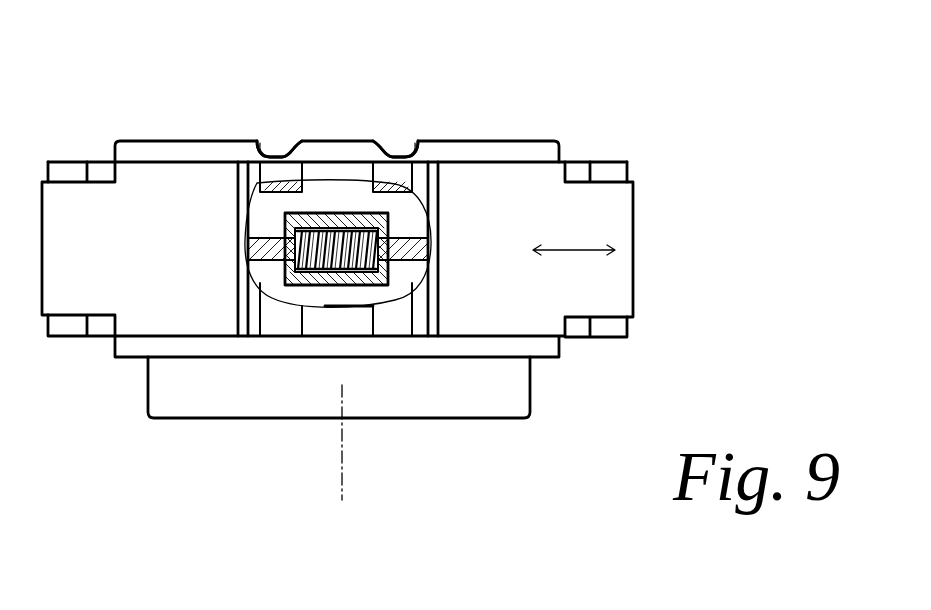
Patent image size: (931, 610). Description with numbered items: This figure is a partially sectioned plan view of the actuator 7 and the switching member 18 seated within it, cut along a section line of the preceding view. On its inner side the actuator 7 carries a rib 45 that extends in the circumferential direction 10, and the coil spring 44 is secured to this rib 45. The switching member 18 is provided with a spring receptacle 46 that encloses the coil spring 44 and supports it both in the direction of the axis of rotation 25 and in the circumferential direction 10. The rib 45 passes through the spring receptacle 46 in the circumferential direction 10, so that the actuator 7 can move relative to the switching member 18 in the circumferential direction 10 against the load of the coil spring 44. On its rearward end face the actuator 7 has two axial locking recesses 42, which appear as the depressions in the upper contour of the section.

The actuator 7 is at (481, 244).
The circumferential direction 10 is at (561, 251).
The switching member 18 is at (341, 195).
The axis of rotation 25 is at (343, 450).
The axial locking recesses 42 is at (273, 126).
The coil spring 44 is at (343, 286).
The rib 45 is at (259, 248).
The spring receptacle 46 is at (258, 195).